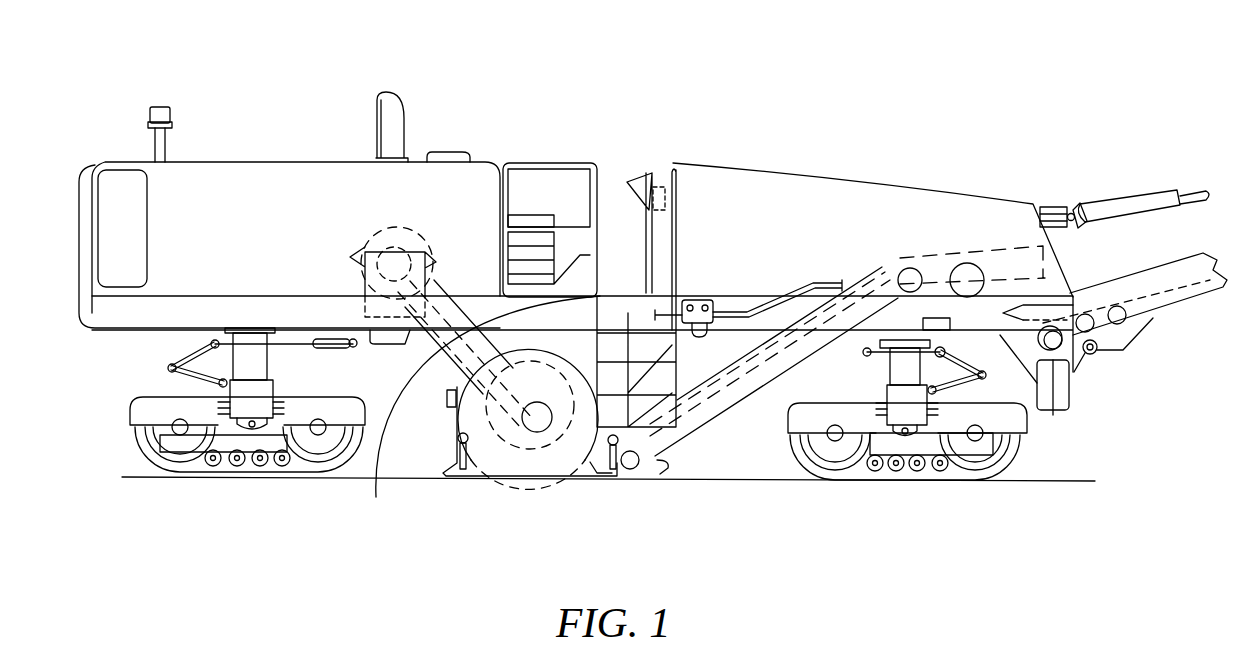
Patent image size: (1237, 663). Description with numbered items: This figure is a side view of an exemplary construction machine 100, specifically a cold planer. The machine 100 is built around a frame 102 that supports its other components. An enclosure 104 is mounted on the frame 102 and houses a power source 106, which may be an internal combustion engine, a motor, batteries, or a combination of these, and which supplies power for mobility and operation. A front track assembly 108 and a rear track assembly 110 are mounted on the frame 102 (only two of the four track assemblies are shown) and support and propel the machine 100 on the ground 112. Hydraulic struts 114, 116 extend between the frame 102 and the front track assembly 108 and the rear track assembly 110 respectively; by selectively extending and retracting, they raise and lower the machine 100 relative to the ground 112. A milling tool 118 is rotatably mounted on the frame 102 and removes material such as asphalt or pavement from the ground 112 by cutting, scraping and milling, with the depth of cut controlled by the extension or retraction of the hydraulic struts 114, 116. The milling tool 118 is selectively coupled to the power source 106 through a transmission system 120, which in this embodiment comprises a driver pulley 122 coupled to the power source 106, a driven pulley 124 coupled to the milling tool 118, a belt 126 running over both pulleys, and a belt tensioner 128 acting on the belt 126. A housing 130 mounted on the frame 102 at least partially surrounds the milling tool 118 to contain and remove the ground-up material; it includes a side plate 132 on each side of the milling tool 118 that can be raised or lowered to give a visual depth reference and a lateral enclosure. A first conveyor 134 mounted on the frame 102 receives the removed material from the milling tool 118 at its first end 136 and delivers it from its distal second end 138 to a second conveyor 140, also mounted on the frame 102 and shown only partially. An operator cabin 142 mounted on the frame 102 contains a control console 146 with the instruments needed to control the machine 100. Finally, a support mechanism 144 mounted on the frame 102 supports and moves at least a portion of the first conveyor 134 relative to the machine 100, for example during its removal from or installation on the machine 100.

The construction machine 100 is at (1040, 58).
The frame 102 is at (103, 331).
The enclosure 104 is at (226, 253).
The power source 106 is at (372, 213).
The front track assembly 108 is at (1047, 464).
The rear track assembly 110 is at (110, 413).
The ground 112 is at (125, 477).
The hydraulic strut 114 is at (887, 370).
The hydraulic strut 116 is at (270, 366).
The milling tool 118 is at (490, 453).
The transmission system 120 is at (446, 275).
The driver pulley 122 is at (380, 277).
The driven pulley 124 is at (553, 445).
The belt 126 is at (490, 297).
The belt tensioner 128 is at (481, 410).
The housing 130 is at (605, 300).
The side plate 132 is at (597, 473).
The first conveyor 134 is at (712, 402).
The first end 136 is at (645, 462).
The second end 138 is at (891, 278).
The second conveyor 140 is at (1178, 296).
The operator cabin 142 is at (570, 112).
The support mechanism 144 is at (737, 290).
The control console 146 is at (628, 181).